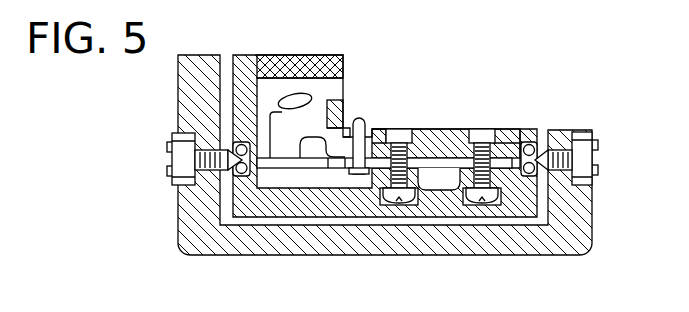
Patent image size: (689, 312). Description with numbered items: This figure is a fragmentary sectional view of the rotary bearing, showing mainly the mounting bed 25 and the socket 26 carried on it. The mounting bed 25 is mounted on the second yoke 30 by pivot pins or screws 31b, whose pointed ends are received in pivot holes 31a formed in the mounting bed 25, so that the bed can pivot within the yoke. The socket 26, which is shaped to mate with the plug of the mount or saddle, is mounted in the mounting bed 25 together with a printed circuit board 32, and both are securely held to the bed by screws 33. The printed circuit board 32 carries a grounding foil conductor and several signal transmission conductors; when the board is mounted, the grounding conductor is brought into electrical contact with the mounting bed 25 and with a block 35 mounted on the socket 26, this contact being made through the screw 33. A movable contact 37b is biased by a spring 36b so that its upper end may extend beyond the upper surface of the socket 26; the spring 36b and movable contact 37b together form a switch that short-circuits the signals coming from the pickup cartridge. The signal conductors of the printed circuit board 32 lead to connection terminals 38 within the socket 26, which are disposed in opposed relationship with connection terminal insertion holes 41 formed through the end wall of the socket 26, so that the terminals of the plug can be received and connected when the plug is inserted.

The mounting bed 25 is at (322, 205).
The socket 26 is at (442, 128).
The second yoke 30 is at (407, 245).
The pivot holes 31a is at (245, 165).
The pivot pins or screws 31b is at (176, 174).
The printed circuit board 32 is at (440, 175).
The screws 33 is at (393, 201).
The block 35 is at (481, 140).
The spring 36b is at (353, 122).
The movable contact 37b is at (373, 129).
The connection terminals 38 is at (300, 96).
The connection terminal insertion holes 41 is at (343, 86).